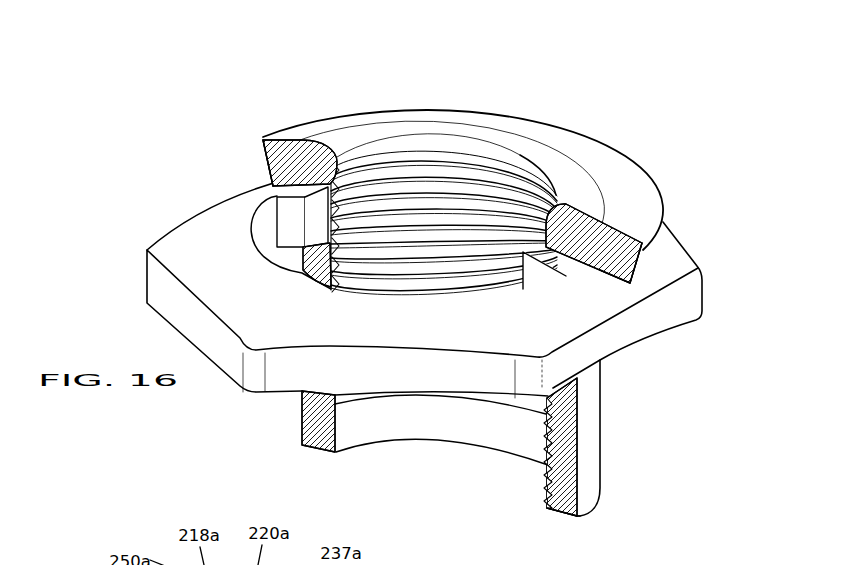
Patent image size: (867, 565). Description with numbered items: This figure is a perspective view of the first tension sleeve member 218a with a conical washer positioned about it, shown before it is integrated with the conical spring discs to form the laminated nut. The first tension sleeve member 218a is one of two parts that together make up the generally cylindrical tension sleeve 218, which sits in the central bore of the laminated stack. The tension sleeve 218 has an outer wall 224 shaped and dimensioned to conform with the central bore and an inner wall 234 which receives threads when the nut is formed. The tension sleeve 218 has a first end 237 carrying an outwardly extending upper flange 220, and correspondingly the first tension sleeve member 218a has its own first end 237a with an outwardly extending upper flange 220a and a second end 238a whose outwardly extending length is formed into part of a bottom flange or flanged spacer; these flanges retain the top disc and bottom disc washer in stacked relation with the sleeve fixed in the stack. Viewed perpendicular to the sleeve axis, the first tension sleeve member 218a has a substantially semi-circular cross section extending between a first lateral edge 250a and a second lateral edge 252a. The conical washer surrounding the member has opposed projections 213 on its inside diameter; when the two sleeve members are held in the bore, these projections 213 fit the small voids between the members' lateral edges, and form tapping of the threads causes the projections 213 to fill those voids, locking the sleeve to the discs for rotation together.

The projection 213 is at (293, 222).
The tension sleeve 218 is at (508, 112).
The first tension sleeve member 218a is at (591, 135).
The upper flange 220 is at (363, 115).
The upper flange 220a is at (442, 118).
The outer wall 224 is at (594, 444).
The inner wall 234 is at (473, 423).
The first end 237 is at (305, 138).
The first end 237a is at (647, 168).
The second end 238a is at (560, 516).
The first lateral edge 250a is at (272, 163).
The second lateral edge 252a is at (628, 246).